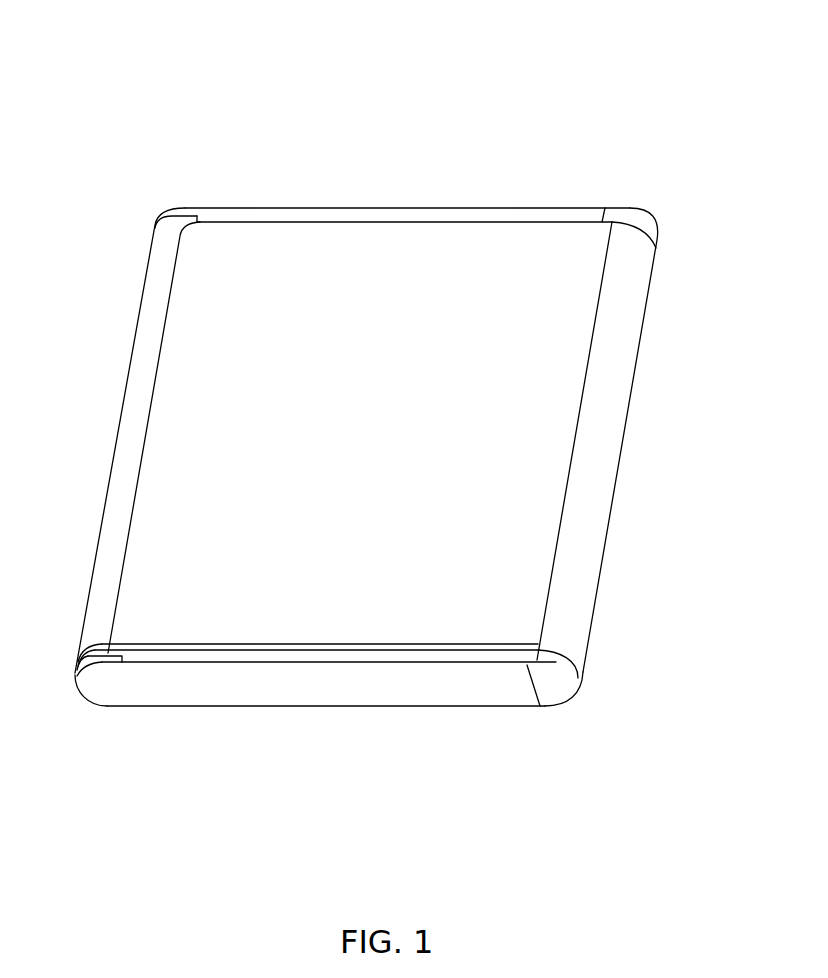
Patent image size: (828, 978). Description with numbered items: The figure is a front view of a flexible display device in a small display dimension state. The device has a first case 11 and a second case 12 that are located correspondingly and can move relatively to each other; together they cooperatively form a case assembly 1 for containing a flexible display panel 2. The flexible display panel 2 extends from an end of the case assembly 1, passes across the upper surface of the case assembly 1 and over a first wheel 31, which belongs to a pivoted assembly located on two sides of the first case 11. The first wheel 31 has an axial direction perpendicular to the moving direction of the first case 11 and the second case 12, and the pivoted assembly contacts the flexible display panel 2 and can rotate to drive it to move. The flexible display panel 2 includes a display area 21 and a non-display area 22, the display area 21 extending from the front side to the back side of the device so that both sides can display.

The case assembly 1 is at (282, 753).
The first case 11 is at (305, 683).
The second case 12 is at (553, 688).
The flexible display panel 2 is at (407, 83).
The display area 21 is at (235, 257).
The non-display area 22 is at (607, 447).
The first wheel 31 is at (75, 687).